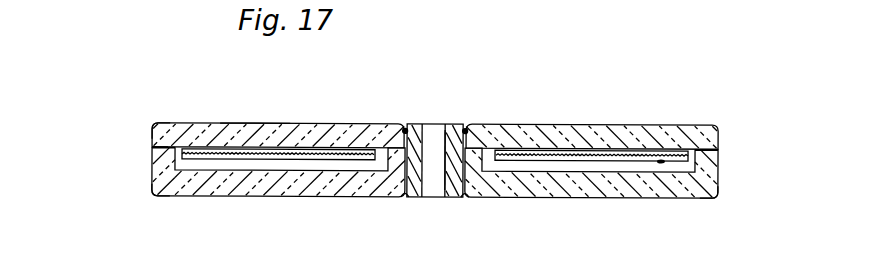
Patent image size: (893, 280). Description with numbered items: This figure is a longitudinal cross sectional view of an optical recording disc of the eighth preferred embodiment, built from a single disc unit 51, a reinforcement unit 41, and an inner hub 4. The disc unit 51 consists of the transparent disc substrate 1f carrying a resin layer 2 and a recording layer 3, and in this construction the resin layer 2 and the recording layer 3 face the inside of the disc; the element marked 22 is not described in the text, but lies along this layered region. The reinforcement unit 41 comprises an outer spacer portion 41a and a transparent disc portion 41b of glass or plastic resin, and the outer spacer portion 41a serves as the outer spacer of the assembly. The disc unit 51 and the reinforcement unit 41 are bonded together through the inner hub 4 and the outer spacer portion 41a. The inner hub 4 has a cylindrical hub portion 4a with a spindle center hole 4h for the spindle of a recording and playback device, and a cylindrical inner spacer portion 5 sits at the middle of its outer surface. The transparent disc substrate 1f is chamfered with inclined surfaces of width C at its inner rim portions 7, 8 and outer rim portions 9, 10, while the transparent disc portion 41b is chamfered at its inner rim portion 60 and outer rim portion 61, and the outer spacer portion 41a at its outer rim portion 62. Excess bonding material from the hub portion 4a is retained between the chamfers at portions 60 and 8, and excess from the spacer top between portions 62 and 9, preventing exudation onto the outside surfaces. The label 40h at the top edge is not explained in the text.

The transparent disc substrate 1f is at (277, 138).
The resin layer 2 is at (587, 152).
The resistance wire 22 is at (556, 152).
The recording layer 3 is at (667, 158).
The inner hub 4 is at (415, 183).
The cylindrical hub portion 4a is at (452, 135).
The spindle center hole 4h is at (433, 143).
The cylindrical inner spacer portion 5 is at (398, 158).
The inner rim portion 7 is at (426, 152).
The inner rim portion 8 is at (395, 136).
The outer rim portion 9 is at (152, 147).
The outer rim portion 10 is at (152, 126).
The hole (adjacent figure) 40h is at (471, 7).
The reinforcement unit 41 is at (218, 198).
The outer spacer portion 41a is at (162, 163).
The transparent disc portion 41b is at (278, 186).
The disc unit 51 is at (247, 124).
The inner rim portion 60 is at (403, 196).
The outer rim portion 61 is at (158, 196).
The outer rim portion 62 is at (152, 150).